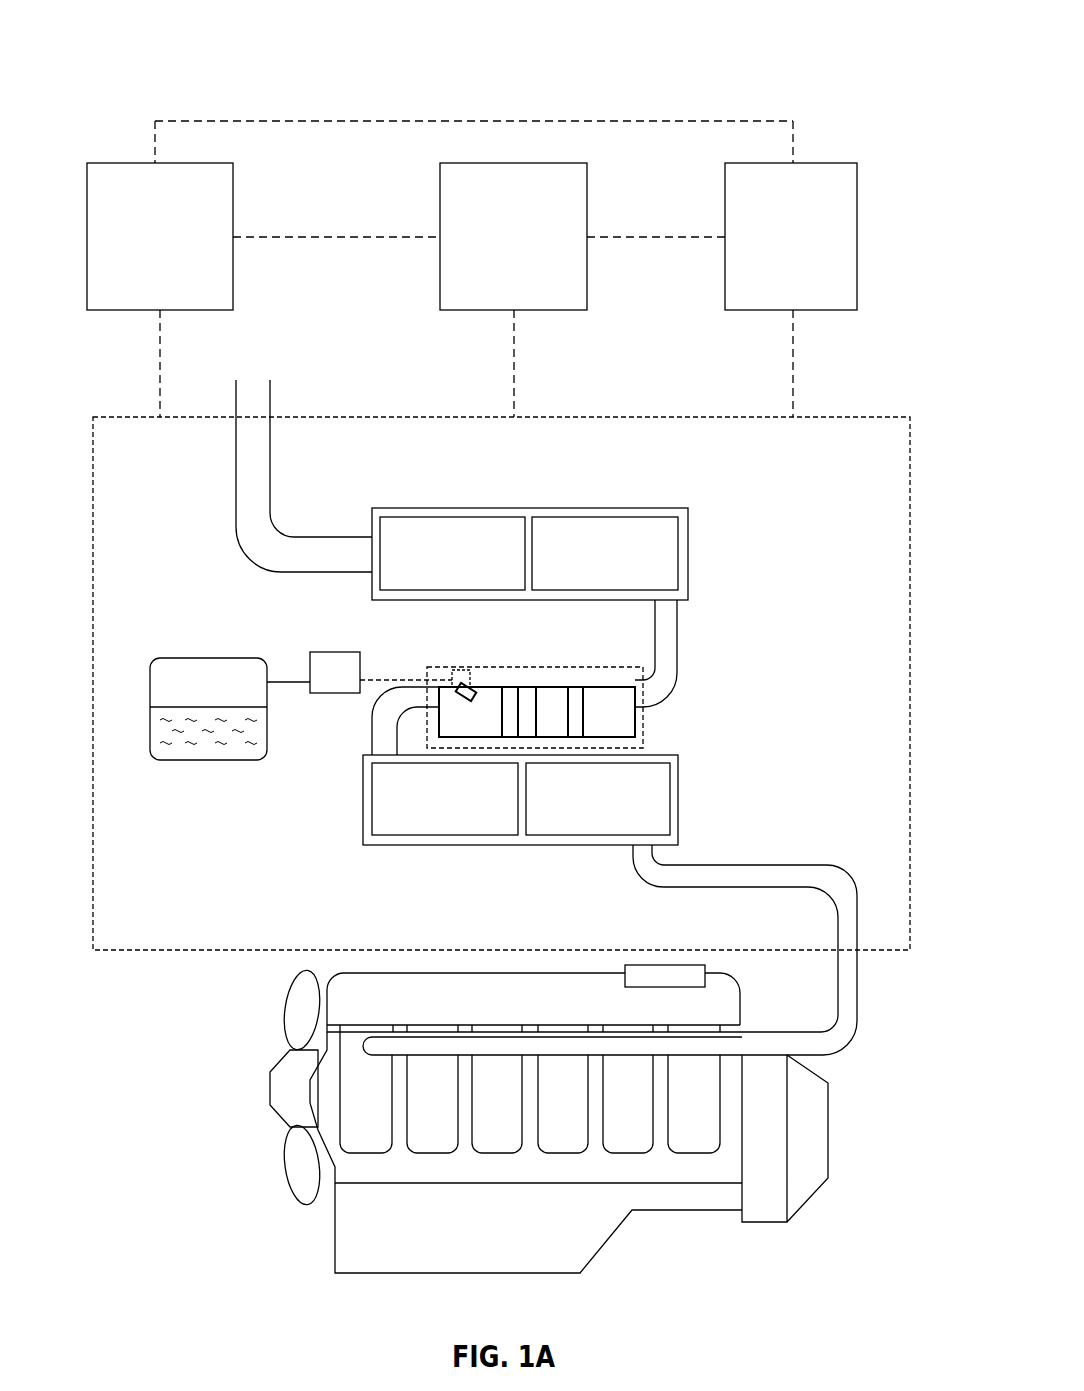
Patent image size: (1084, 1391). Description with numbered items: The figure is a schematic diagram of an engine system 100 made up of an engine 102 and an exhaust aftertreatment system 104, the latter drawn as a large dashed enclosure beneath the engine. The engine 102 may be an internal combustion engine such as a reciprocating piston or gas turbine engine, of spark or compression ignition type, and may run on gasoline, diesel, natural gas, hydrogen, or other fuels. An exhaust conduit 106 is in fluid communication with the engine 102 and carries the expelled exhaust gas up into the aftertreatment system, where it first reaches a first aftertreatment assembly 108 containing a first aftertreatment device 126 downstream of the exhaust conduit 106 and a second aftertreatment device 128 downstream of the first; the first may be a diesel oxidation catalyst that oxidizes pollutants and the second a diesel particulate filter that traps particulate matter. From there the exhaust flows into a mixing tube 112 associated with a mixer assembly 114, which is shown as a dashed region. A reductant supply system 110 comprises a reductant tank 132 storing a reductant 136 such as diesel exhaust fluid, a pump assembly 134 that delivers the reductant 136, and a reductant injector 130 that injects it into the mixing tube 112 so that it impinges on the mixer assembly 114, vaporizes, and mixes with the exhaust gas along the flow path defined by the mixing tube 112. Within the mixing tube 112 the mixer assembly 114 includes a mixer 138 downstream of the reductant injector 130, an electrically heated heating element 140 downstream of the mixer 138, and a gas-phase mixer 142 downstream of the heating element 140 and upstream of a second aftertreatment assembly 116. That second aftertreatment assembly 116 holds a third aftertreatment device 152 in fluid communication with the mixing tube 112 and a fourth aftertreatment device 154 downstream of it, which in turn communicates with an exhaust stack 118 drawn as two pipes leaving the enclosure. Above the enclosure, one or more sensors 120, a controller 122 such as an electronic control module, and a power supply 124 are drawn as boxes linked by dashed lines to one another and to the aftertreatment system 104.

The engine system 100 is at (760, 50).
The engine 102 is at (335, 1240).
The exhaust aftertreatment system 104 is at (858, 416).
The exhaust conduit 106 is at (845, 877).
The first aftertreatment assembly 108 is at (562, 824).
The reductant supply system 110 is at (239, 693).
The mixing tube 112 is at (591, 676).
The mixer assembly 114 is at (538, 677).
The second aftertreatment assembly 116 is at (530, 519).
The exhaust stack 118 is at (303, 533).
The one or more sensors 120 is at (178, 300).
The controller 122 is at (530, 268).
The power supply 124 is at (807, 283).
The first aftertreatment device 126 is at (605, 802).
The second aftertreatment device 128 is at (442, 797).
The reductant injector 130 is at (467, 668).
The reductant tank 132 is at (197, 658).
The pump assembly 134 is at (317, 695).
The reductant 136 is at (190, 747).
The mixer 138 is at (555, 692).
The heating element 140 is at (513, 692).
The gas-phase mixer 142 is at (577, 703).
The third aftertreatment device 152 is at (603, 553).
The fourth aftertreatment device 154 is at (448, 557).